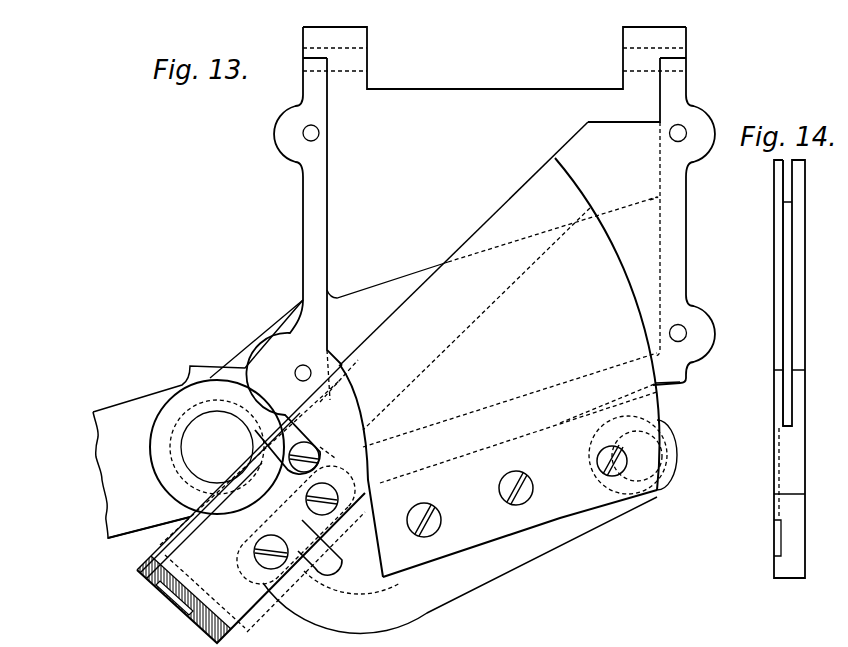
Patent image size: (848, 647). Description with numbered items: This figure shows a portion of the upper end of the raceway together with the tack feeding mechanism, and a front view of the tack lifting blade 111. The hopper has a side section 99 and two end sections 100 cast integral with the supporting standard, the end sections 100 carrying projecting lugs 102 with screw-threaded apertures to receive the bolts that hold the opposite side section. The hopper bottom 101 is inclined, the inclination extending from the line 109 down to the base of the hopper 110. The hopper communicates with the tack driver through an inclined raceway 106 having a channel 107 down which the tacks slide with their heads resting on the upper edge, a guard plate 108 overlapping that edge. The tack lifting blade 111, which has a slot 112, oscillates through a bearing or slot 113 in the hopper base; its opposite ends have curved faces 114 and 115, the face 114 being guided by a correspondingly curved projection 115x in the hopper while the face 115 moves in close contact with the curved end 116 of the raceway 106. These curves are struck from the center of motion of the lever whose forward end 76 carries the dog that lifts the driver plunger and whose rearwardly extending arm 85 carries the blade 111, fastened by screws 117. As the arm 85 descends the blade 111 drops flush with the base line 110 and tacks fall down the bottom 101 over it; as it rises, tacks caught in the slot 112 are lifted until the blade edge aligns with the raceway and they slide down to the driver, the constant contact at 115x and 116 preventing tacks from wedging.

In FIG. 13, the forward end of lever 76 is at (117, 400).
In FIG. 13, the rearwardly extending arm 85 is at (460, 565).
In FIG. 13, the side section 99 is at (494, 90).
In FIG. 13, the end sections 100 is at (325, 205).
In FIG. 13, the bottom 101 is at (463, 244).
In FIG. 13, the projecting lugs 102 is at (278, 130).
In FIG. 13, the inclined raceway 106 is at (235, 623).
In FIG. 13, the channel 107 is at (147, 580).
In FIG. 13, the guard plate 108 is at (150, 541).
In FIG. 13, the line 109 is at (395, 283).
In FIG. 13, the base of the hopper 110 is at (583, 383).
In FIG. 13, the tack lifting blade 111 is at (500, 367).
In FIG. 14, the tack lifting blade 111 is at (802, 307).
In FIG. 14, the slot 112 is at (783, 267).
In FIG. 13, the bearing or slot 113 is at (682, 383).
In FIG. 13, the curved face 114 is at (633, 307).
In FIG. 13, the curved face 115 is at (364, 428).
In FIG. 13, the projection 115x is at (585, 205).
In FIG. 13, the curved end of the raceway 116 is at (298, 418).
In FIG. 13, the screws 117 is at (422, 505).